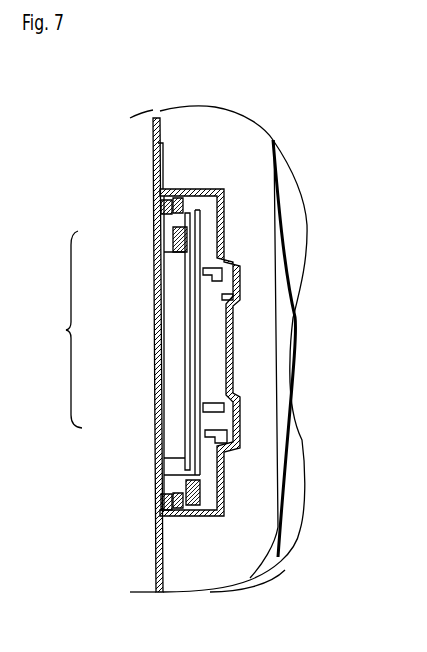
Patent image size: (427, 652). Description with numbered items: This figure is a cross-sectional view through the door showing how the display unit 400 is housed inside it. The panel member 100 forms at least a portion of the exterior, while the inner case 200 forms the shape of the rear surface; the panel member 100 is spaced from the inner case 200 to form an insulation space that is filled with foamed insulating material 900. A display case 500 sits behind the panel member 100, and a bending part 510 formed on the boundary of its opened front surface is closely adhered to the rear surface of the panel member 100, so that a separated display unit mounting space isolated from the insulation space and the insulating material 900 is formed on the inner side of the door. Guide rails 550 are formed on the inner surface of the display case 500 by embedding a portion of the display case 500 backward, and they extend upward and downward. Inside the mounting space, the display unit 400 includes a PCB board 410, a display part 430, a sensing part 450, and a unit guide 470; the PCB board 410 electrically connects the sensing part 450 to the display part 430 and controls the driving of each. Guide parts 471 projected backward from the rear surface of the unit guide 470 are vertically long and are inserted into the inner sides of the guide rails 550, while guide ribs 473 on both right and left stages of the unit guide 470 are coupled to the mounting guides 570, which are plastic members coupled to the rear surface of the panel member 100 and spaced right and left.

The panel member 100 is at (157, 557).
The inner case 200 is at (283, 498).
The display unit 400 is at (57, 329).
The PCB board 410 is at (224, 474).
The display part 430 is at (174, 380).
The sensing part 450 is at (180, 234).
The unit guide 470 is at (184, 282).
The guide parts 471 is at (222, 297).
The guide ribs 473 is at (165, 198).
The display case 500 is at (203, 185).
The bending part 510 is at (168, 162).
The guide rails 550 is at (206, 273).
The mounting guides 570 is at (172, 212).
The insulating material 900 is at (218, 577).